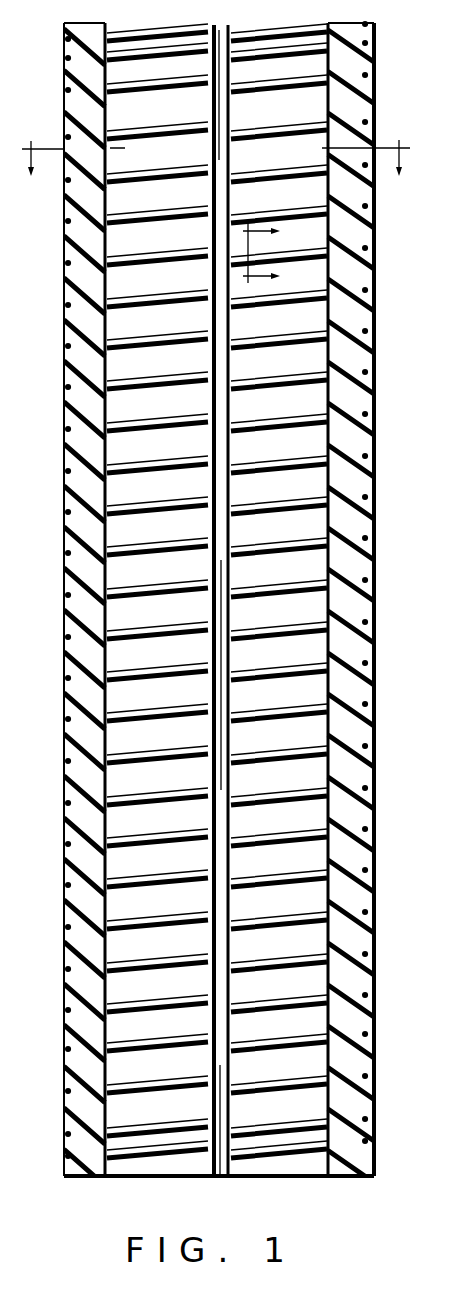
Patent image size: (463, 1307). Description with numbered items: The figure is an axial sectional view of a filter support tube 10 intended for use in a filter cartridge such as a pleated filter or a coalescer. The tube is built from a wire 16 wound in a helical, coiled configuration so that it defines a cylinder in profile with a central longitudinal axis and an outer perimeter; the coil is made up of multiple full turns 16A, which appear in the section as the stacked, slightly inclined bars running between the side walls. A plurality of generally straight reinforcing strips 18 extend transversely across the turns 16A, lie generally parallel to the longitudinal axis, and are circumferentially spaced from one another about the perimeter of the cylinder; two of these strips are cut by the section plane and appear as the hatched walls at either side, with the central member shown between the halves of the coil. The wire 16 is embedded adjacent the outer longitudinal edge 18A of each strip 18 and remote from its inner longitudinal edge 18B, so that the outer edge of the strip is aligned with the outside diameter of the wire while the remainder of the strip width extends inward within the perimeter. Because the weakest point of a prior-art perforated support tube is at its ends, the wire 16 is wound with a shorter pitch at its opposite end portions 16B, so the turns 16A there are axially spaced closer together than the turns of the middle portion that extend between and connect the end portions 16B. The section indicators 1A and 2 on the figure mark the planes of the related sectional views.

The filter support tube 10 is at (235, 625).
The wire 16 is at (376, 275).
The turns 16A is at (155, 337).
The opposite end portions 16B is at (378, 24).
The reinforcing strips 18 is at (113, 490).
The outer longitudinal edge 18A is at (64, 371).
The inner longitudinal edge 18B is at (118, 534).
The section line 1A- 1A is at (274, 254).
The section line 2- 2 is at (216, 172).